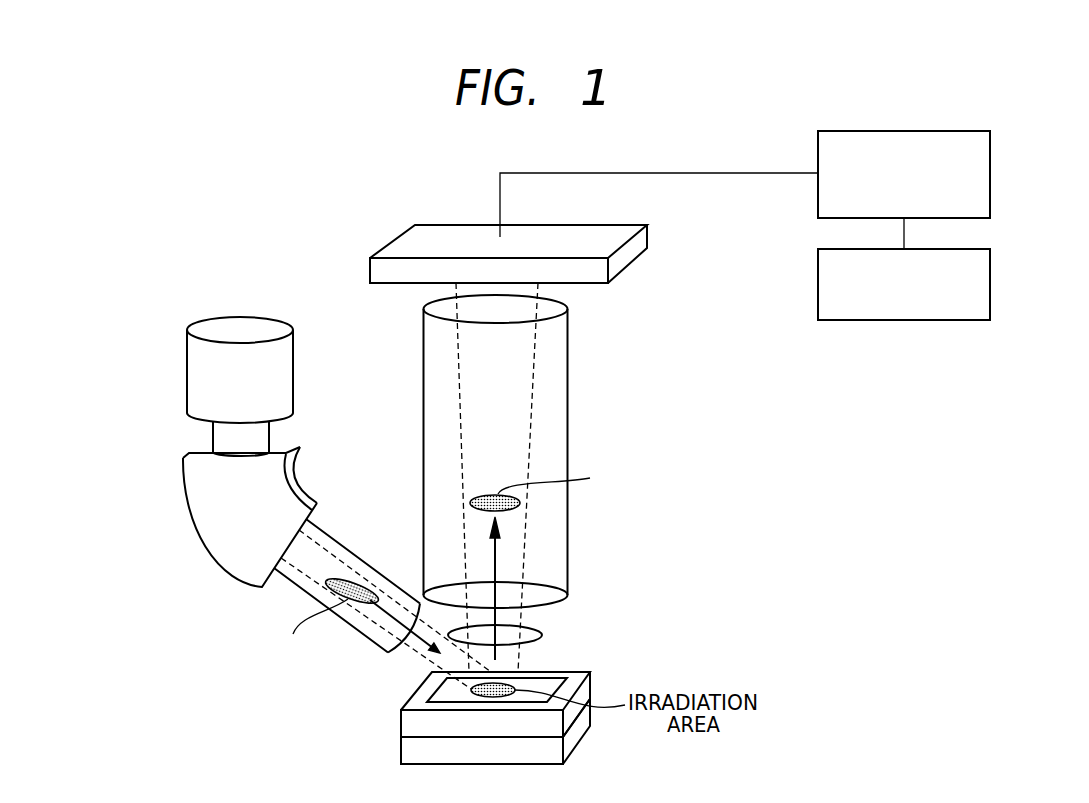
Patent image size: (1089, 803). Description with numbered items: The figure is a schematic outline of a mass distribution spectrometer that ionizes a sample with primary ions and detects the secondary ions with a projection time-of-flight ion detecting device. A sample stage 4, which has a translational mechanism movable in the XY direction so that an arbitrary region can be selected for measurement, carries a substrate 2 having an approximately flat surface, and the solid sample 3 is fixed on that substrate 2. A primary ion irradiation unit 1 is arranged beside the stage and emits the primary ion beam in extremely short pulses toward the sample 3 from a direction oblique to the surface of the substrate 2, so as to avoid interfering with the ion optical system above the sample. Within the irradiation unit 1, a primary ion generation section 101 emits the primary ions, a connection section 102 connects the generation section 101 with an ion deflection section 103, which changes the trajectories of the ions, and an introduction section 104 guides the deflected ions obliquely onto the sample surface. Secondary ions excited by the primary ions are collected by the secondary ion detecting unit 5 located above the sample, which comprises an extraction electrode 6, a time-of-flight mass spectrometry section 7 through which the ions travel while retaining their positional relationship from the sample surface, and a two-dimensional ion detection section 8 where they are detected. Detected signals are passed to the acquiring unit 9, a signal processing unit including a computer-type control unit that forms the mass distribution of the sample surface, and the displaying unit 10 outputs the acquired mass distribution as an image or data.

The primary ion irradiation unit 1 is at (102, 288).
The primary ion generation section 101 is at (222, 322).
The connection section 102 is at (213, 432).
The ion deflection section 103 is at (213, 537).
The introduction section 104 is at (294, 588).
The substrate 2 is at (446, 692).
The sample 3 is at (408, 722).
The sample stage 4 is at (408, 750).
The secondary ion detecting unit 5 is at (732, 208).
The extraction electrode 6 is at (542, 637).
The time-of-flight mass spectrometry section 7 is at (568, 548).
The two-dimensional ion detection section 8 is at (413, 238).
The acquiring unit 9 is at (990, 158).
The displaying unit 10 is at (990, 272).